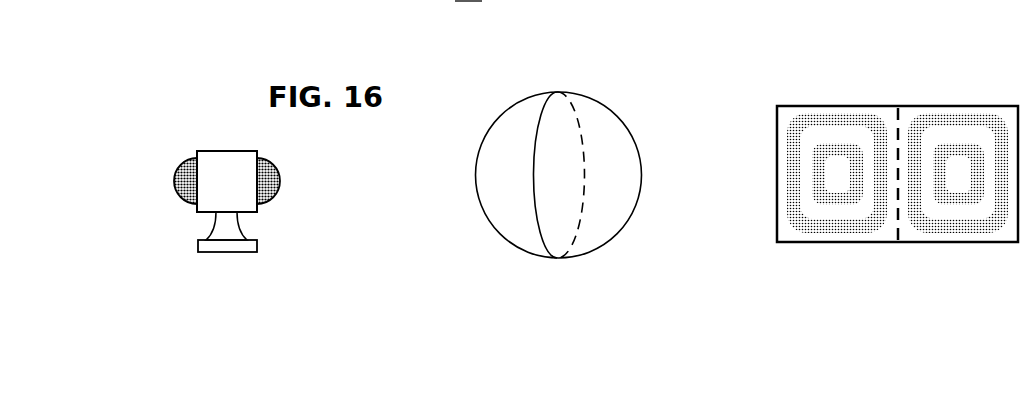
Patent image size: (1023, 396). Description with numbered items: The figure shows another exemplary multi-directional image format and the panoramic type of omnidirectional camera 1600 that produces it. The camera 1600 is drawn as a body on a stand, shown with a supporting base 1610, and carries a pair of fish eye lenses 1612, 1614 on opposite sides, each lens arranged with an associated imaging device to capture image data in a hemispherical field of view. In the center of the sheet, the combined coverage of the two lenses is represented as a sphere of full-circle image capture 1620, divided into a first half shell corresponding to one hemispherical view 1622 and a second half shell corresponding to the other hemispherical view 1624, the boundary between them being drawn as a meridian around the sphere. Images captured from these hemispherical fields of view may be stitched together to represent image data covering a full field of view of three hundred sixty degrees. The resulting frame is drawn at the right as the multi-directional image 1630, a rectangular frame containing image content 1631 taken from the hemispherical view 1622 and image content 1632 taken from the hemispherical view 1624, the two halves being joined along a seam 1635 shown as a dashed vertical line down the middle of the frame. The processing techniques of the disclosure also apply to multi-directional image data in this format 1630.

The omnidirectional camera 1600 is at (345, 130).
The camera body with stand 1610 is at (215, 226).
The fish eye lens 1612 is at (173, 181).
The fish eye lens 1614 is at (281, 181).
The 360 degree image capture 1620 is at (546, 179).
The hemispherical view 1622 is at (483, 147).
The hemispherical view 1624 is at (624, 118).
The multi-directional image format 1630 is at (897, 186).
The image content 1631 is at (855, 234).
The image content 1632 is at (976, 234).
The seam 1635 is at (931, 174).